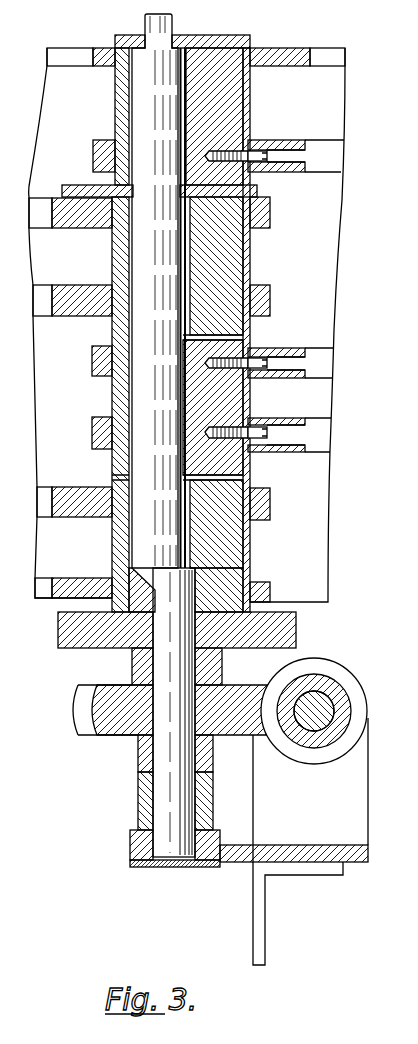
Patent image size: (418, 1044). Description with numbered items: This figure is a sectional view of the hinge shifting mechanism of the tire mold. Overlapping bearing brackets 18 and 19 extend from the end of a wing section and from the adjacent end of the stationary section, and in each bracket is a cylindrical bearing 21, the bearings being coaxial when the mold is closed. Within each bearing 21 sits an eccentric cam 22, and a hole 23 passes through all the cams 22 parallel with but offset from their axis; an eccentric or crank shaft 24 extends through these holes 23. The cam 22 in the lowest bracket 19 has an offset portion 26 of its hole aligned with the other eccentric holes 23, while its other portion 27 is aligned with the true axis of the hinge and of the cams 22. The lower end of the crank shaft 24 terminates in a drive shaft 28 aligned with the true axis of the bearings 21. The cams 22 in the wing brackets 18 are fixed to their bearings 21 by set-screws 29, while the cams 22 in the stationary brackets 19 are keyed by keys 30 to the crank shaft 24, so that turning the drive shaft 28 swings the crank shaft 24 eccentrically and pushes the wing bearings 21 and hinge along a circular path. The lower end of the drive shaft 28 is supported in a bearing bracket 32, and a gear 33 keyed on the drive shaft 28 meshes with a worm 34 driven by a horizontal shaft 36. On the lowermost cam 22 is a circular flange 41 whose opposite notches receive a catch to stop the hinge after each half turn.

The bearing bracket 18 is at (301, 57).
The bearing bracket 19 is at (62, 287).
The cylindrical bearing 21 is at (250, 243).
The eccentric cam 22 is at (237, 264).
The hole 23 is at (128, 102).
The crank shaft 24 is at (189, 62).
The offset portion 26 is at (123, 552).
The other portion 27 is at (200, 582).
The drive shaft 28 is at (188, 669).
The set-screw 29 is at (258, 153).
The key 30 is at (187, 237).
The bearing bracket 32 is at (200, 852).
The gear 33 is at (105, 730).
The worm 34 is at (348, 686).
The horizontal shaft 36 is at (333, 714).
The circular flange 41 is at (62, 630).